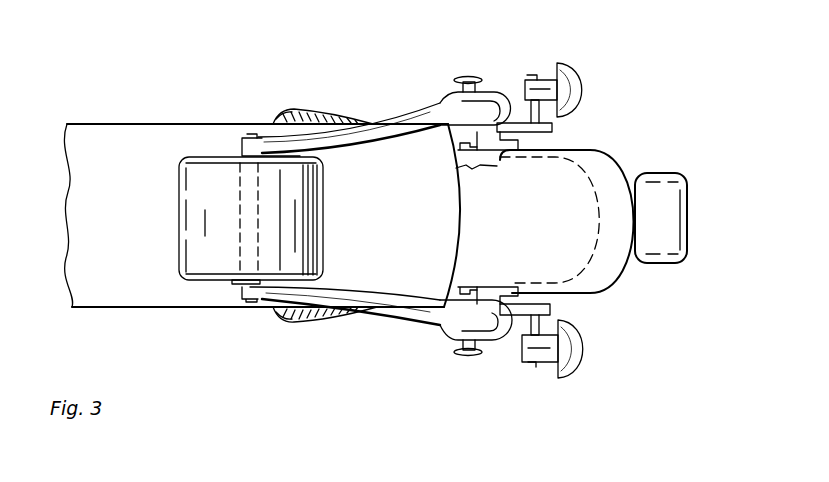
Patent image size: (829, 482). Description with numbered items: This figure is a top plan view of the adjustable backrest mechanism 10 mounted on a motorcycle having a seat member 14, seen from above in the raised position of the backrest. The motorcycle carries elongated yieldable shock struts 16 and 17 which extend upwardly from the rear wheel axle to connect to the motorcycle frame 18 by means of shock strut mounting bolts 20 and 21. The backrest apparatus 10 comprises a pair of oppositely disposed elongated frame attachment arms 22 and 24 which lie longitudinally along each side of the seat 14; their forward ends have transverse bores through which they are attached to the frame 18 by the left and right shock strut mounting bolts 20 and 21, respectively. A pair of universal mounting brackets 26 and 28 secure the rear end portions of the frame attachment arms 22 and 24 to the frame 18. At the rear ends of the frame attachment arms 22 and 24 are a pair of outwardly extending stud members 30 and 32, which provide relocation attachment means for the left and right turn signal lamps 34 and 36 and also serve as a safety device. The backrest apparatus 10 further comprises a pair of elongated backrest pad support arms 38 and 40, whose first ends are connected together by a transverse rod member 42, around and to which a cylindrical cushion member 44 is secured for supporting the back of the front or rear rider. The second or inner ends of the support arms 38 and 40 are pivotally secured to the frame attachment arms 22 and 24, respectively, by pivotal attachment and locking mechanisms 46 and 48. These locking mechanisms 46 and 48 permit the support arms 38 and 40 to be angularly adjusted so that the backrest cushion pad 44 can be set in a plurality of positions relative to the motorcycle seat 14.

The adjustable backrest mechanism 10 is at (296, 92).
The seat member 14 is at (102, 235).
The shock strut 16 is at (328, 323).
The shock strut 17 is at (318, 110).
The motorcycle frame 18 is at (258, 124).
The shock strut mounting bolt 20 is at (280, 320).
The shock strut mounting bolt 21 is at (283, 112).
The frame attachment arm 22 is at (378, 322).
The frame attachment arm 24 is at (380, 120).
The universal mounting bracket 26 is at (490, 285).
The universal mounting bracket 28 is at (495, 150).
The stud member 30 is at (520, 325).
The stud member 32 is at (516, 100).
The turn signal lamp 34 is at (550, 360).
The turn signal lamp 36 is at (547, 82).
The backrest pad support arm 38 is at (430, 320).
The backrest pad support arm 40 is at (425, 118).
The transverse rod member 42 is at (240, 238).
The cushion member 44 is at (322, 217).
The pivotal attachment and locking apparatus 46 is at (464, 362).
The pivotal attachment and locking apparatus 48 is at (452, 72).